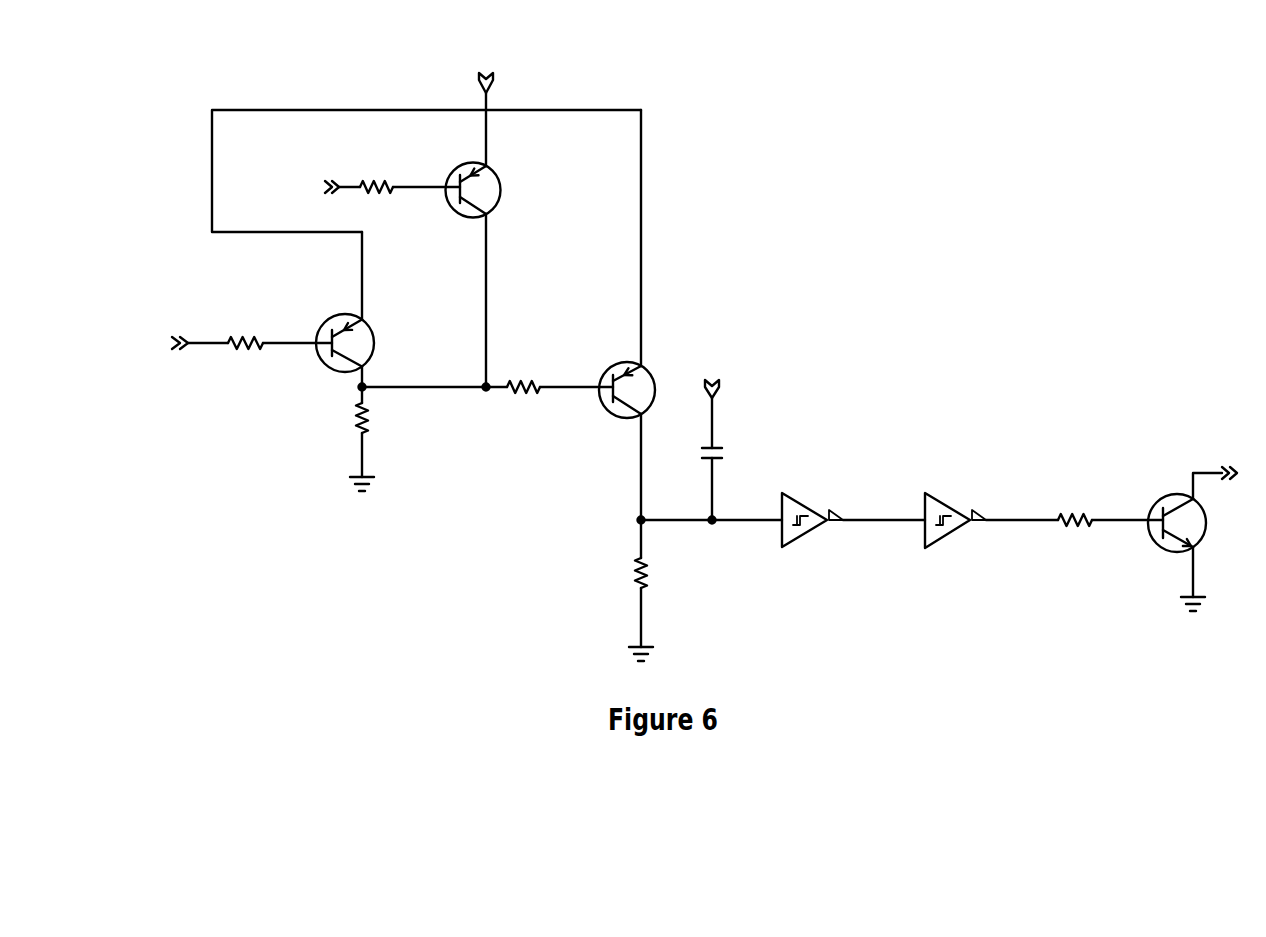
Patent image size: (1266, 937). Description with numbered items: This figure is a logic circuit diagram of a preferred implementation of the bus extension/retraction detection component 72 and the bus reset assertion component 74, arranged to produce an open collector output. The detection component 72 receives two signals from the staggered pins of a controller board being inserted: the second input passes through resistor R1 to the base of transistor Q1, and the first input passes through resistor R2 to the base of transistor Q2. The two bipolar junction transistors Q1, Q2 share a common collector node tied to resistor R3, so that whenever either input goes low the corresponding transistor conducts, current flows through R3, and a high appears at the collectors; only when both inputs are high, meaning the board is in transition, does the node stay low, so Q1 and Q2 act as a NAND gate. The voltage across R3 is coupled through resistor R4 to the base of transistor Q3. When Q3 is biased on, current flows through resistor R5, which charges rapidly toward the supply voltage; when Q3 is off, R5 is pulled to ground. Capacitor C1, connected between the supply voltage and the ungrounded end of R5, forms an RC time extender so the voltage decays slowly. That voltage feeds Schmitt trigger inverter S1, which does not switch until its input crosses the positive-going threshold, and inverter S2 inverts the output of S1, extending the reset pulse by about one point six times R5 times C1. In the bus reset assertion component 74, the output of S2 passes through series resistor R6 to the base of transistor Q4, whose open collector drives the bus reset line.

The bus extension/retraction detection component 72 is at (570, 90).
The bus reset assertion component 74 is at (878, 450).
The resistor R1 is at (245, 358).
The resistor R2 is at (376, 205).
The resistor R3 is at (340, 418).
The resistor R4 is at (523, 404).
The resistor R5 is at (624, 573).
The series resistor R6 is at (1075, 506).
The transistor Q1 is at (345, 343).
The transistor Q2 is at (489, 190).
The transistor Q3 is at (640, 395).
The transistor Q4 is at (1196, 523).
The capacitor C1 is at (726, 457).
The Schmitt trigger inverter S1 is at (812, 511).
The inverter S2 is at (955, 512).